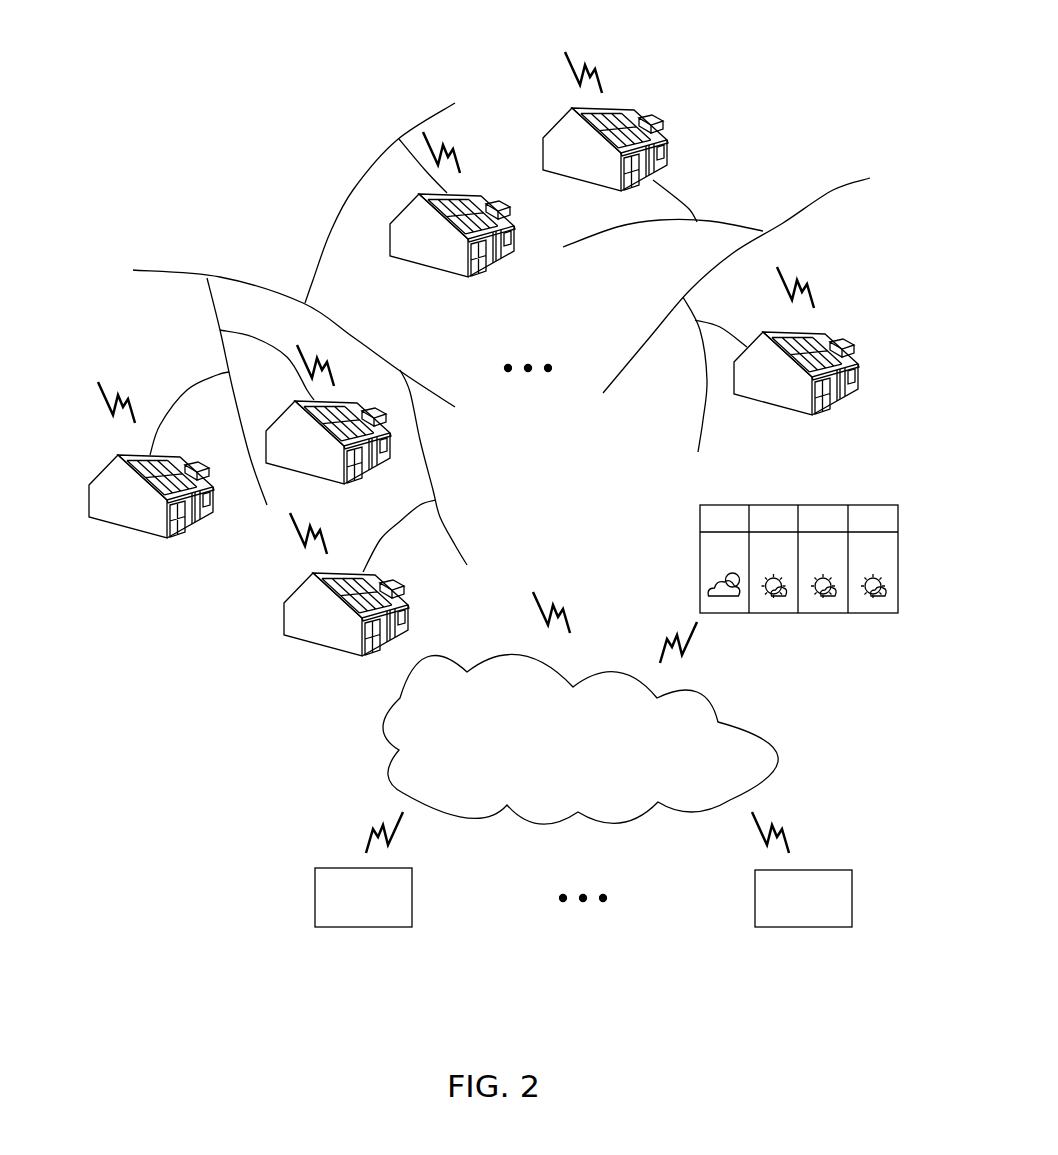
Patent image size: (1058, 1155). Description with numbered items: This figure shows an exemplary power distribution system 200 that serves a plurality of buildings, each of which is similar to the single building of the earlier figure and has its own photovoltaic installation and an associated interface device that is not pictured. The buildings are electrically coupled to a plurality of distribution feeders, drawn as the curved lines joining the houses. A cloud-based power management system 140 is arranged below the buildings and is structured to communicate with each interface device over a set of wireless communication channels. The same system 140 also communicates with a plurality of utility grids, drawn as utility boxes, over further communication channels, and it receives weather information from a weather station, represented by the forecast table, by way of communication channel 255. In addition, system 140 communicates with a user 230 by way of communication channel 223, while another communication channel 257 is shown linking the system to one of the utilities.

The power distribution system 200 is at (806, 49).
The communication channel 223 is at (579, 612).
The user 230 is at (552, 546).
The power management system 140 is at (764, 730).
The communication channel 255 is at (701, 644).
The utility communication link 257 is at (360, 832).